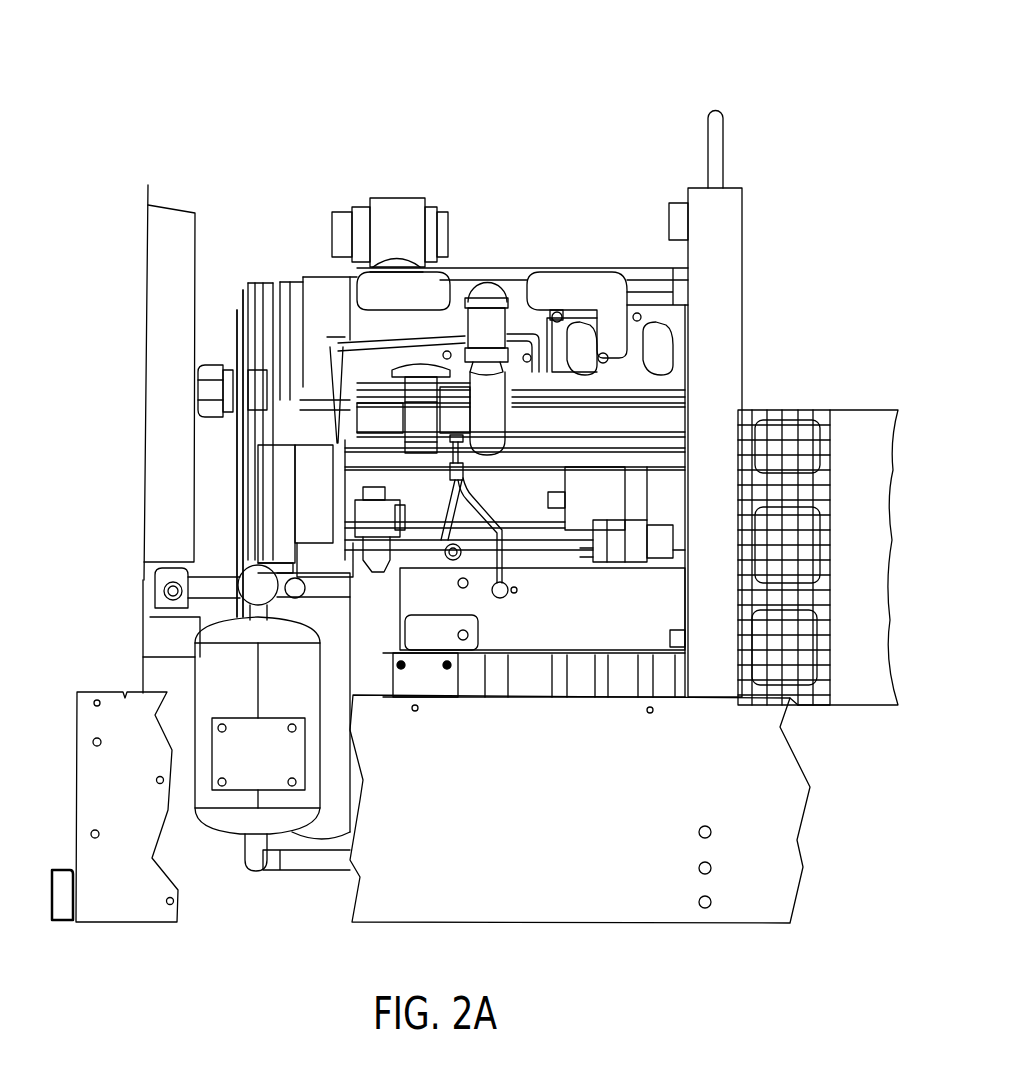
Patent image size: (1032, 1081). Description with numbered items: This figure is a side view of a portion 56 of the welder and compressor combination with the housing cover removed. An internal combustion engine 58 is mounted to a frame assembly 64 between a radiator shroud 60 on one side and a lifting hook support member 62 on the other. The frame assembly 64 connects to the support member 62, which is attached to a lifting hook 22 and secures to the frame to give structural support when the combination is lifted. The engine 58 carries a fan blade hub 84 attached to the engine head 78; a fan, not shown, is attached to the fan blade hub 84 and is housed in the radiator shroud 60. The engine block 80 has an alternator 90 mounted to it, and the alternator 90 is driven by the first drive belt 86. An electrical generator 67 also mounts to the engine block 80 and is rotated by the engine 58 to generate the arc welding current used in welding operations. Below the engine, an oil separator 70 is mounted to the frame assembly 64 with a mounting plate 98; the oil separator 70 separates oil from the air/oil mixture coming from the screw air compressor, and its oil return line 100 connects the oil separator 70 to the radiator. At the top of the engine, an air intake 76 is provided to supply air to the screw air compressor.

The portion 56 is at (188, 108).
The internal combustion engine 58 is at (533, 235).
The lifting hook 22 is at (708, 128).
The radiator shroud 60 is at (181, 256).
The lifting hook support member 62 is at (729, 227).
The frame assembly 64 is at (578, 786).
The electrical generator 67 is at (869, 565).
The oil separator 70 is at (238, 674).
The air intake 76 is at (409, 230).
The engine head 78 is at (630, 372).
The engine block 80 is at (614, 607).
The fan blade hub 84 is at (213, 363).
The first drive belt 86 is at (240, 453).
The alternator 90 is at (329, 522).
The mounting plate 98 is at (274, 758).
The oil return line 100 is at (253, 852).